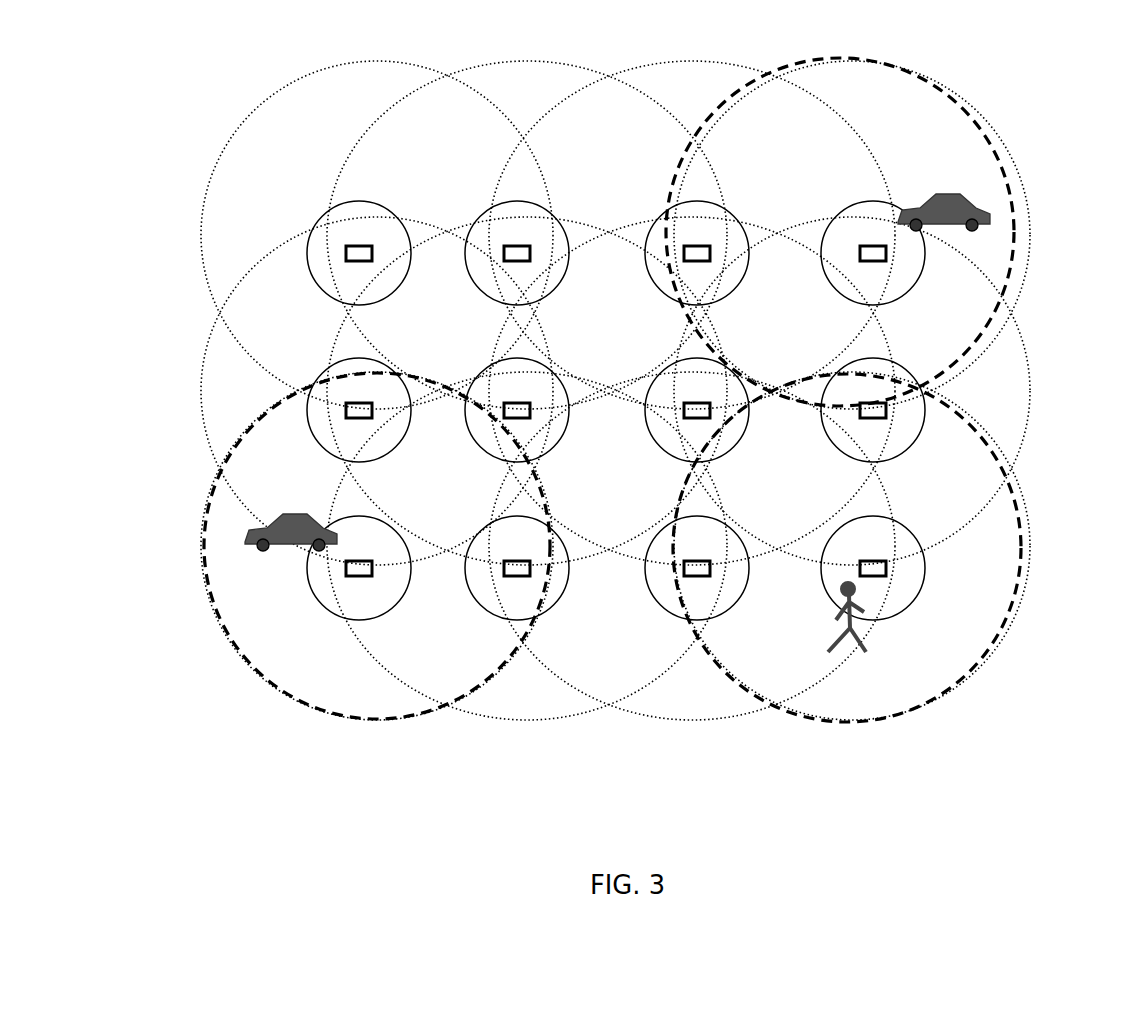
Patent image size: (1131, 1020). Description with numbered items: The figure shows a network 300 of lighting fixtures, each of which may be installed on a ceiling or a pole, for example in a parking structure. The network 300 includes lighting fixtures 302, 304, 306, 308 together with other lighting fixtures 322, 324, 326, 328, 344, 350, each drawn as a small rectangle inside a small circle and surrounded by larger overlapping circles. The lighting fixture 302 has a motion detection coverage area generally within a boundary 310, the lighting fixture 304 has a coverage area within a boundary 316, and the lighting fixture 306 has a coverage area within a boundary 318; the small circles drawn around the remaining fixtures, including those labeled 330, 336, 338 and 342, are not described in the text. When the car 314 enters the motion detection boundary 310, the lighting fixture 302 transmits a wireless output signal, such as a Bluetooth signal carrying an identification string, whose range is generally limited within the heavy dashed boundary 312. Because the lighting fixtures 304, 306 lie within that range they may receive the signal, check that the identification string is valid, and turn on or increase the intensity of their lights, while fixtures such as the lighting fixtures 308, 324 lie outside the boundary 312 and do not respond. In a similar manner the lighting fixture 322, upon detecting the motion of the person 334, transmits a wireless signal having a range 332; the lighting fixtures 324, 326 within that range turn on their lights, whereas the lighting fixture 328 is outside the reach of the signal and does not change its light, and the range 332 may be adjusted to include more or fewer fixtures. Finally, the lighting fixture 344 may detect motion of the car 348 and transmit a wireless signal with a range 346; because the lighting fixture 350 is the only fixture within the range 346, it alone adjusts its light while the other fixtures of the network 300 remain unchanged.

The network 300 is at (193, 127).
The lighting fixture 302 is at (370, 581).
The lighting fixture 304 is at (528, 581).
The lighting fixture 306 is at (355, 419).
The lighting fixture 308 is at (522, 419).
The boundary 310 is at (318, 604).
The boundary 312 is at (292, 706).
The car 314 is at (248, 536).
The boundary 316 is at (568, 571).
The boundary 318 is at (395, 455).
The lighting fixture 322 is at (888, 568).
The lighting fixture 324 is at (703, 581).
The lighting fixture 326 is at (888, 419).
The lighting fixture 328 is at (700, 419).
The near coverage area 330 is at (925, 599).
The range 332 is at (1014, 606).
The person 334 is at (828, 656).
The near coverage area 336 is at (672, 609).
The near coverage area 338 is at (930, 409).
The access point 342 is at (858, 250).
The lighting fixture 344 is at (913, 289).
The range 346 is at (957, 99).
The car 348 is at (975, 191).
The lighting fixture 350 is at (690, 244).